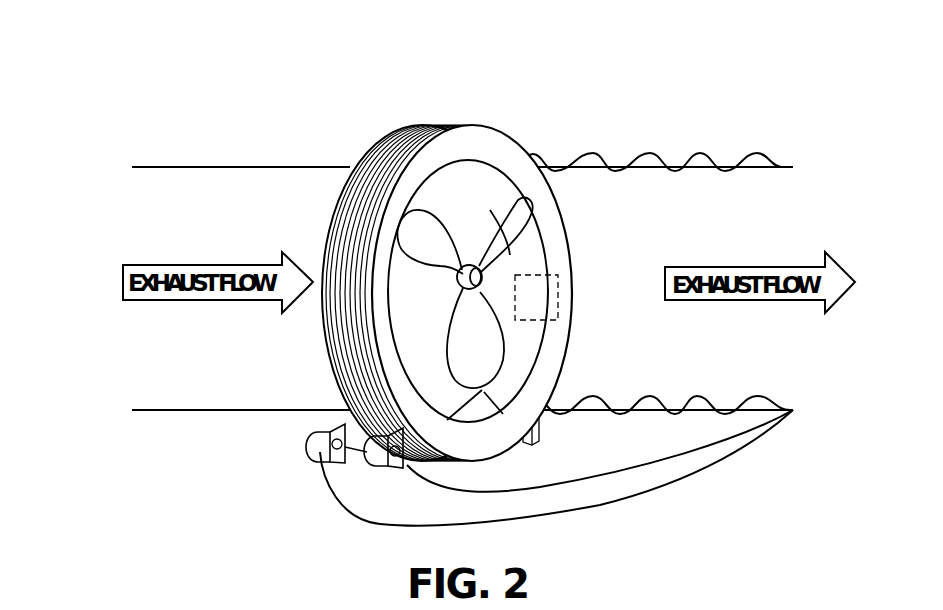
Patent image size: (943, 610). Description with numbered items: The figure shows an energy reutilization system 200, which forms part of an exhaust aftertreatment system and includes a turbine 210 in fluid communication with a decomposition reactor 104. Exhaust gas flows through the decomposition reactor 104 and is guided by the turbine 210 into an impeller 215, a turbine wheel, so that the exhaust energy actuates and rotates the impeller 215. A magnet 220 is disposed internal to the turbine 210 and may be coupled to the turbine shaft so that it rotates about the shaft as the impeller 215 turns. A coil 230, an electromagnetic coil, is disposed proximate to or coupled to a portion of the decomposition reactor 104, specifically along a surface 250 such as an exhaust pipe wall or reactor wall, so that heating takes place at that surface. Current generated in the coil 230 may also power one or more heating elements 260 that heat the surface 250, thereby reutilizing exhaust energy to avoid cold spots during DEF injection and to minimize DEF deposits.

The decomposition reactor 104 is at (256, 143).
The energy reutilization system 200 is at (425, 58).
The turbine 210 is at (470, 146).
The impeller 215 is at (475, 325).
The magnet 220 is at (560, 275).
The coil 230 is at (372, 153).
The surface 250 is at (148, 408).
The heating element 260 is at (793, 410).